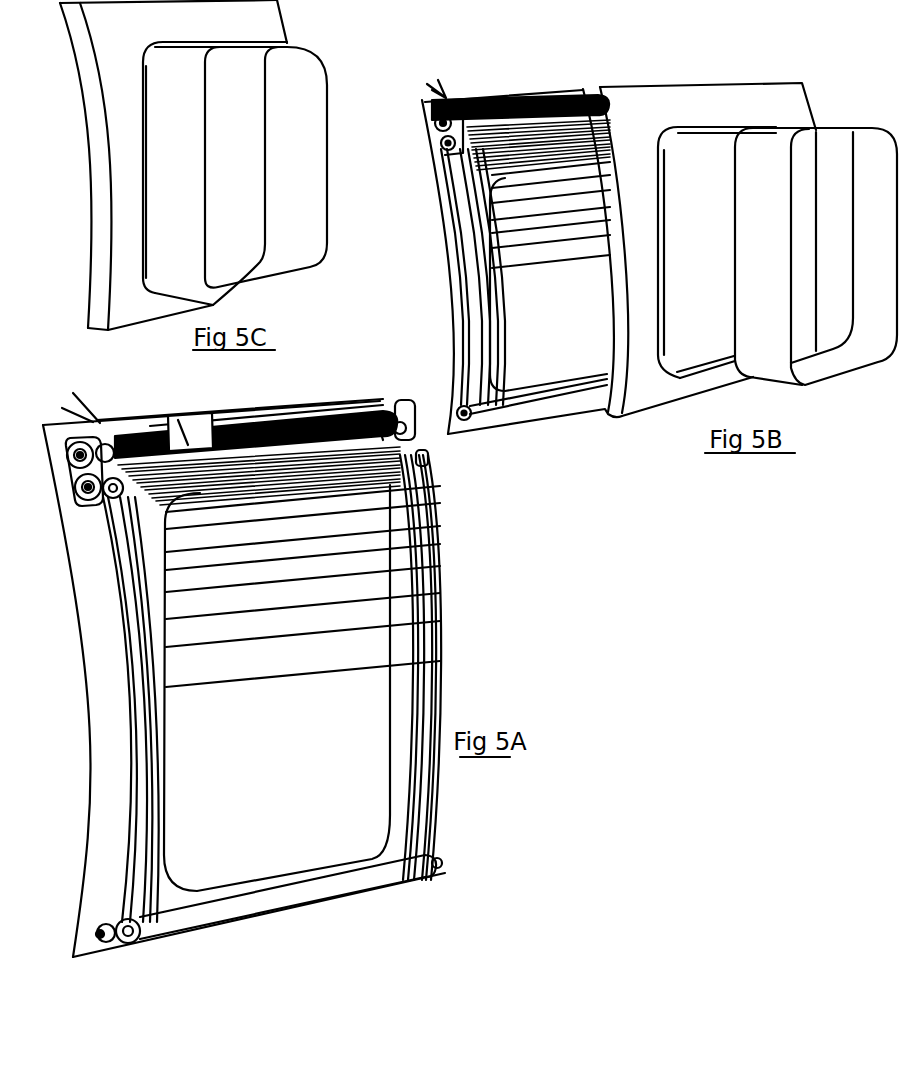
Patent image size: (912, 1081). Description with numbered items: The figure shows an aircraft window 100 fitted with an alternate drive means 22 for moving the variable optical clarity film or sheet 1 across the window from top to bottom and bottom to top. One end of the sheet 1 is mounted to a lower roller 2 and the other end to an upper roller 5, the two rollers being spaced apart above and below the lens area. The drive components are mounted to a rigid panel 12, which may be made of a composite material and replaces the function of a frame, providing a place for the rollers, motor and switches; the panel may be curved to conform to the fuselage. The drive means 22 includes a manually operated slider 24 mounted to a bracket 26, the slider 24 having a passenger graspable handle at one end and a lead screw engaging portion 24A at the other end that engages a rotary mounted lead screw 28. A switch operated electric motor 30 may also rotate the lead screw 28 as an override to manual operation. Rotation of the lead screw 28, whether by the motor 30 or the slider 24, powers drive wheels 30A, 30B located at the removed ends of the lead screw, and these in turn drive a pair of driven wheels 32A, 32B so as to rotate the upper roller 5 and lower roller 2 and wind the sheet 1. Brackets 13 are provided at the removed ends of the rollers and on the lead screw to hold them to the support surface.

In FIG. 5B, the variable optical clarity film or sheet 1 is at (536, 257).
In FIG. 5A, the variable optical clarity film or sheet 1 is at (378, 708).
In FIG. 5A, the lower roller 2 is at (440, 862).
In FIG. 5A, the upper roller 5 is at (398, 406).
In FIG. 5A, the rigid panel 12 is at (121, 718).
In FIG. 5A, the brackets 13 is at (122, 957).
In FIG. 5B, the alternate drive means 22 is at (570, 68).
In FIG. 5A, the alternate drive means 22 is at (298, 375).
In FIG. 5B, the manually operated slider 24 is at (510, 104).
In FIG. 5A, the manually operated slider 24 is at (193, 415).
In FIG. 5A, the lead screw engaging portion 24A is at (165, 414).
In FIG. 5B, the bracket 26 is at (484, 96).
In FIG. 5A, the bracket 26 is at (247, 413).
In FIG. 5A, the lead screw 28 is at (280, 403).
In FIG. 5A, the electric motor 30 is at (120, 410).
In FIG. 5A, the drive wheel 30A is at (405, 390).
In FIG. 5A, the drive wheel 30B is at (83, 417).
In FIG. 5A, the driven wheel 32A is at (429, 451).
In FIG. 5A, the driven wheel 32B is at (90, 507).
In FIG. 5C, the aircraft window 100 is at (352, 32).
In FIG. 5B, the aircraft window 100 is at (647, 477).
In FIG. 5A, the aircraft window 100 is at (515, 656).